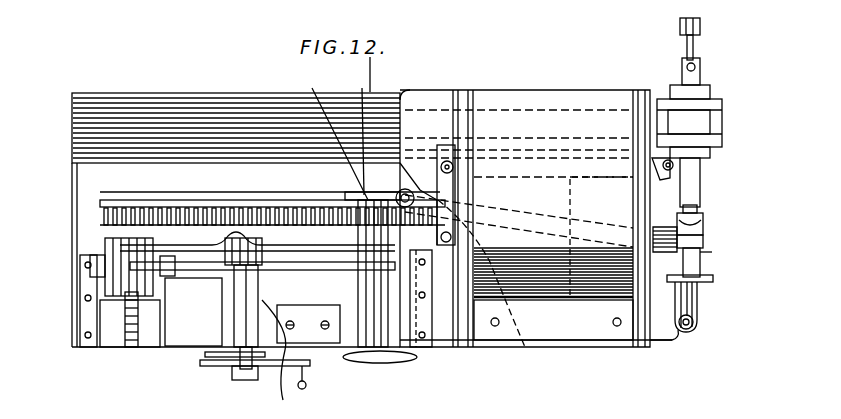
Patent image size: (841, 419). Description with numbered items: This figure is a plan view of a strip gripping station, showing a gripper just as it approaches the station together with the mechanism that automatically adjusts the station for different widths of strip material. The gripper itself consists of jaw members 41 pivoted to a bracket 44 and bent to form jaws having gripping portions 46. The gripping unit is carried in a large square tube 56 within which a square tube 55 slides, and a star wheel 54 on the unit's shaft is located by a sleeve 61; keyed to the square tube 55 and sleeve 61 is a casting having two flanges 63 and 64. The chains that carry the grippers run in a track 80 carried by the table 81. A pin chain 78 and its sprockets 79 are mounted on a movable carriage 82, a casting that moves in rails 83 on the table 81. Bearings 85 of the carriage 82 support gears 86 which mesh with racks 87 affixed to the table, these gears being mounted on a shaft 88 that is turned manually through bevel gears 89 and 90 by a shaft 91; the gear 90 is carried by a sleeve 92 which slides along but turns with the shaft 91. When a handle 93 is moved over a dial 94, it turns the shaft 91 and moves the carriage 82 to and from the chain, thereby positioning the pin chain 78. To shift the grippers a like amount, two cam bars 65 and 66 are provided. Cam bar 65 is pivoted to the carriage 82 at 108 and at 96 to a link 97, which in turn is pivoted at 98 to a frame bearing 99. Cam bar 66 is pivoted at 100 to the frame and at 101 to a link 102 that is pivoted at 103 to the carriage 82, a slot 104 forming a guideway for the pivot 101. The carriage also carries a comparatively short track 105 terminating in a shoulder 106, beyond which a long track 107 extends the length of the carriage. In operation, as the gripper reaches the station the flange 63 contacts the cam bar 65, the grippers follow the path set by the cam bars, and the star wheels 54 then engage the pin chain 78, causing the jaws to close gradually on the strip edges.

The gripping portions 46 is at (700, 32).
The jaw members 41 is at (687, 50).
The bracket 44 is at (700, 62).
The pivot 100 is at (695, 165).
The tube 56 is at (700, 170).
The square tube 55 is at (698, 212).
The flange 63 is at (705, 226).
The flange 64 is at (705, 243).
The pivot 96 is at (740, 255).
The sleeve 61 is at (702, 265).
The star wheel 54 is at (708, 282).
The link 97 is at (698, 302).
The pivot 98 is at (698, 328).
The frame bearing 99 is at (677, 338).
The track 80 is at (72, 125).
The table 81 is at (92, 180).
The sprockets 79 is at (100, 202).
The pin chain 78 is at (95, 222).
The bearings 85 is at (88, 251).
The rails 83 is at (86, 287).
The carriage 82 is at (105, 320).
The racks 87 is at (130, 347).
The gears 86 is at (150, 292).
The bevel gear 90 is at (236, 300).
The sleeve 92 is at (212, 362).
The dial 94 is at (225, 366).
The shaft 91 is at (246, 380).
The handle 93 is at (306, 388).
The shaft 88 is at (262, 275).
The bevel gear 89 is at (246, 238).
The long track 107 is at (213, 192).
The shoulder 106 is at (321, 134).
The track 105 is at (348, 126).
The link 102 is at (440, 200).
The pivot 101 is at (448, 145).
The pivot 108 is at (470, 222).
The cam bar 65 is at (508, 213).
The cam bar 66 is at (586, 172).
The slot 104 is at (553, 320).
The pivot 103 is at (523, 347).